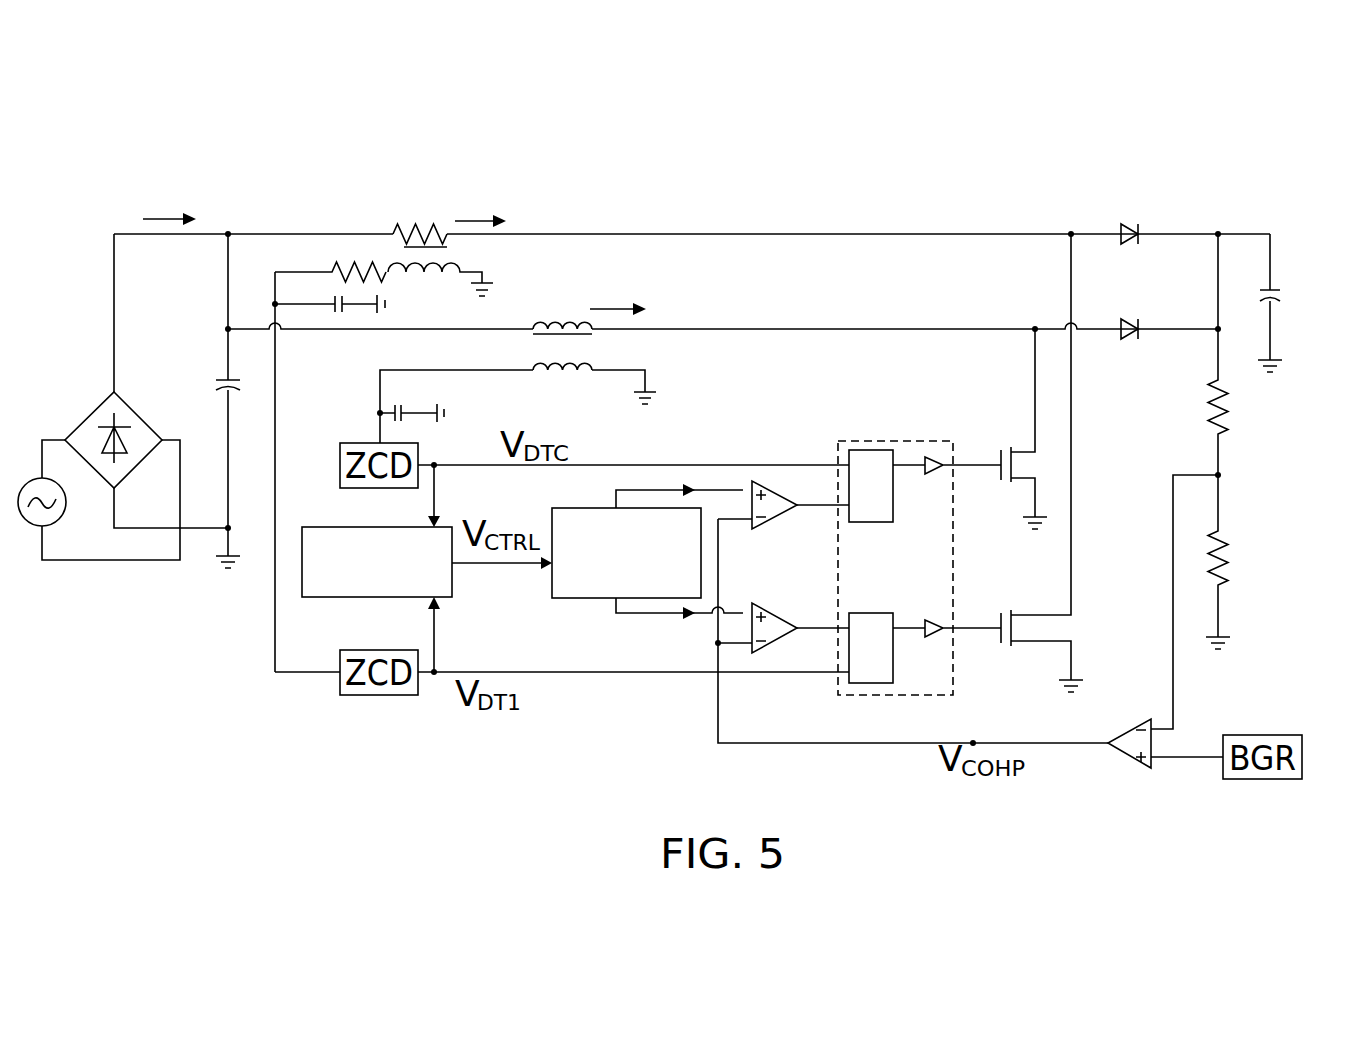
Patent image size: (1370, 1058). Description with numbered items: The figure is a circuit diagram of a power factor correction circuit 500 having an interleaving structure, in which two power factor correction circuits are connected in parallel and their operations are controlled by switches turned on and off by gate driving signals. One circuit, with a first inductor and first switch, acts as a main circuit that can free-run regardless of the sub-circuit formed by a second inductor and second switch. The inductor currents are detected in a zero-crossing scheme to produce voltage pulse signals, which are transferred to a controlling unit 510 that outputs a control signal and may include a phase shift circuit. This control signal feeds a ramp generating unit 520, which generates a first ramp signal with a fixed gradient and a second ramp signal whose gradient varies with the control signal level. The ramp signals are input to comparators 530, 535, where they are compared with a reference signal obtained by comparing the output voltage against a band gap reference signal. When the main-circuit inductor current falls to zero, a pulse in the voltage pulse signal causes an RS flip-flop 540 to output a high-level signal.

The power factor correction circuit 500 is at (1293, 208).
The controlling unit 510 is at (302, 562).
The ramp generating unit 520 is at (557, 598).
The comparator 530 is at (773, 613).
The comparator 535 is at (773, 487).
The RS flip-flop 540 is at (908, 440).